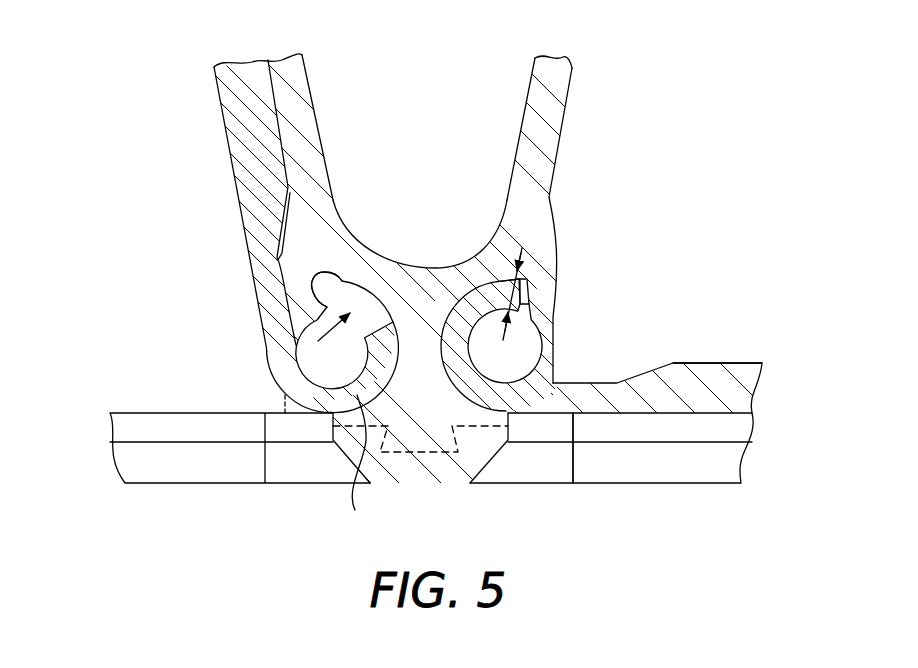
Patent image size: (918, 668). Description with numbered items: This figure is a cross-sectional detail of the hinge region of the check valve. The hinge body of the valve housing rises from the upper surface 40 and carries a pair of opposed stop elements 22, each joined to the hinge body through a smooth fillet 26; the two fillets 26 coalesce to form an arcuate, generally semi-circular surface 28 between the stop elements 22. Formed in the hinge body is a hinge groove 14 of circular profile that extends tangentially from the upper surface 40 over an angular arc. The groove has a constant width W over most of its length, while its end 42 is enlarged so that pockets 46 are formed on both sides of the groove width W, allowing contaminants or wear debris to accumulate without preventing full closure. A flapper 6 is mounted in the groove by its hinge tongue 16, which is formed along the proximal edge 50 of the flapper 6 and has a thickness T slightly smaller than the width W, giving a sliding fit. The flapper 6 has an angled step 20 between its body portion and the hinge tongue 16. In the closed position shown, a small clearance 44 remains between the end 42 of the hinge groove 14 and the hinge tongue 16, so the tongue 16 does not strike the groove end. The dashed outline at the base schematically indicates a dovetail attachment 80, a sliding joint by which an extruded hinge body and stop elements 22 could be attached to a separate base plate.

The stop element 22 is at (300, 108).
The fillet 26 is at (333, 207).
The hinge groove 14 is at (350, 290).
The semi-circular surface 28 is at (417, 268).
The thickness T is at (500, 250).
The pocket 46 is at (532, 272).
The hinge tongue 16 is at (528, 292).
The clearance 44 is at (529, 302).
The angled step 20 is at (648, 390).
The flapper 6 is at (720, 375).
The end of the hinge groove 42 is at (323, 303).
The width W is at (315, 342).
The upper surface 40 is at (176, 412).
The dovetail attachment 80 is at (437, 455).
The proximal edge 50 is at (618, 390).